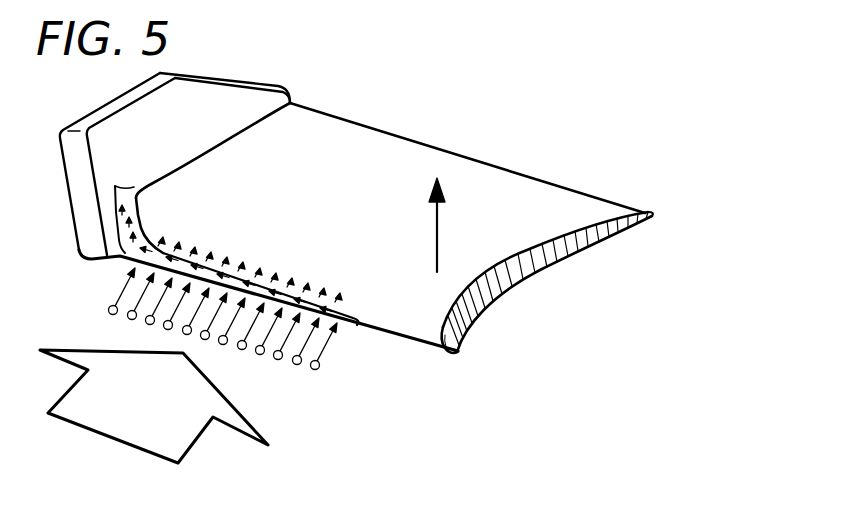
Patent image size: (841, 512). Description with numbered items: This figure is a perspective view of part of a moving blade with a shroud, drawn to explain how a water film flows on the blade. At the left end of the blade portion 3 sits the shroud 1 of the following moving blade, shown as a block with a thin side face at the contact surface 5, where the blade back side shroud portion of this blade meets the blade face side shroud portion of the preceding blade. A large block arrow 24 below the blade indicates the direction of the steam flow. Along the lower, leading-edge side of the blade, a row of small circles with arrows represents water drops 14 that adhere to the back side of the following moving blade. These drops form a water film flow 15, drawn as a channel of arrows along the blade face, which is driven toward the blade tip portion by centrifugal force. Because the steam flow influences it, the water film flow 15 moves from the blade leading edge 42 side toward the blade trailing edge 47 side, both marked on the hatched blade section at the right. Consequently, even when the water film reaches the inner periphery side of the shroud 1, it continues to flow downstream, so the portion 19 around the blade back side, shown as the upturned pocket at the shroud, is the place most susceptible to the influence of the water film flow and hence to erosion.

The shroud of following moving blade 1 is at (213, 108).
The blade portion 3 is at (405, 157).
The contact surface 5 is at (75, 190).
The water drop 14 is at (320, 371).
The water film flow 15 is at (258, 273).
The portion around blade back side 19 is at (118, 176).
The air flow direction arrow 24 is at (154, 406).
The blade leading edge 42 is at (447, 354).
The blade trailing edge 47 is at (647, 208).